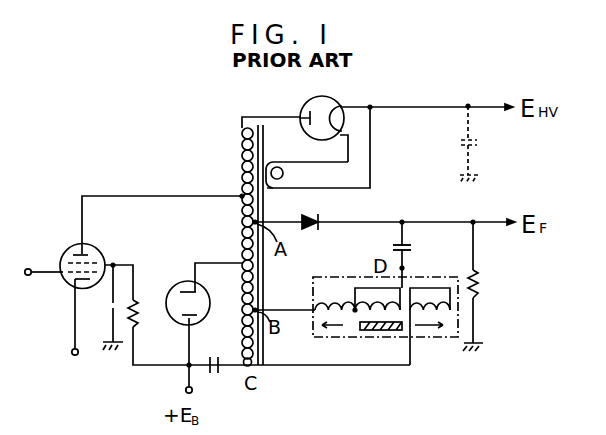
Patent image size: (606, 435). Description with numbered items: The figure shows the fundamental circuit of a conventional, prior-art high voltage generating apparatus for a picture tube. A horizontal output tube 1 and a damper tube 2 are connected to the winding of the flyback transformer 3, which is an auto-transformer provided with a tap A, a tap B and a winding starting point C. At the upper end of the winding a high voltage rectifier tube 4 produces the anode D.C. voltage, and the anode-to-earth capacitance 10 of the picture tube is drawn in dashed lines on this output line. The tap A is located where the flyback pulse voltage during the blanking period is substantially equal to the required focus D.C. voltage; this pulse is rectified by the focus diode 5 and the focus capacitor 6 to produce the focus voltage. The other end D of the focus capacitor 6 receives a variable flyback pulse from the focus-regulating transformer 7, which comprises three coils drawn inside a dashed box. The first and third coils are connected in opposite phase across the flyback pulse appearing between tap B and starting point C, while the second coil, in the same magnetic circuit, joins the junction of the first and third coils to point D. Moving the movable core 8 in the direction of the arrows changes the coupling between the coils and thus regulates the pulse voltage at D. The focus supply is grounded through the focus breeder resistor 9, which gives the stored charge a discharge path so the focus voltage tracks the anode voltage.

The horizontal output tube 1 is at (64, 252).
The damper tube 2 is at (178, 282).
The flyback transformer 3 is at (258, 104).
The high voltage rectifier tube 4 is at (334, 100).
The focus diode 5 is at (310, 217).
The focus capacitor 6 is at (412, 248).
The focus-regulating transformer 7 is at (333, 277).
The movable core 8 is at (380, 331).
The focus breeder resistor 9 is at (477, 283).
The anode-to-earth capacitance 10 is at (478, 140).